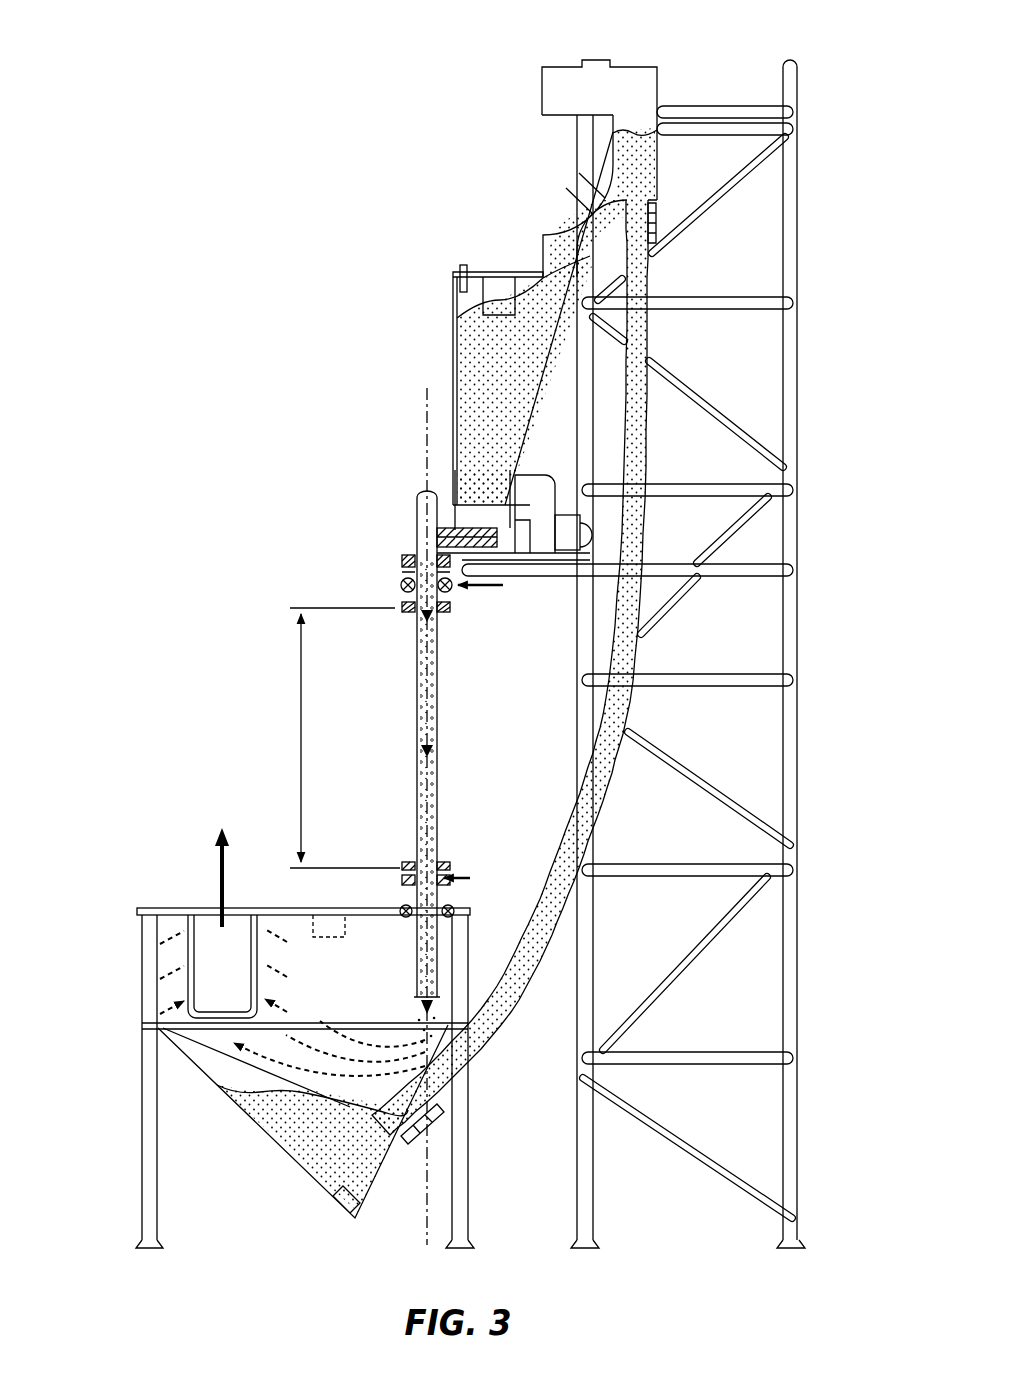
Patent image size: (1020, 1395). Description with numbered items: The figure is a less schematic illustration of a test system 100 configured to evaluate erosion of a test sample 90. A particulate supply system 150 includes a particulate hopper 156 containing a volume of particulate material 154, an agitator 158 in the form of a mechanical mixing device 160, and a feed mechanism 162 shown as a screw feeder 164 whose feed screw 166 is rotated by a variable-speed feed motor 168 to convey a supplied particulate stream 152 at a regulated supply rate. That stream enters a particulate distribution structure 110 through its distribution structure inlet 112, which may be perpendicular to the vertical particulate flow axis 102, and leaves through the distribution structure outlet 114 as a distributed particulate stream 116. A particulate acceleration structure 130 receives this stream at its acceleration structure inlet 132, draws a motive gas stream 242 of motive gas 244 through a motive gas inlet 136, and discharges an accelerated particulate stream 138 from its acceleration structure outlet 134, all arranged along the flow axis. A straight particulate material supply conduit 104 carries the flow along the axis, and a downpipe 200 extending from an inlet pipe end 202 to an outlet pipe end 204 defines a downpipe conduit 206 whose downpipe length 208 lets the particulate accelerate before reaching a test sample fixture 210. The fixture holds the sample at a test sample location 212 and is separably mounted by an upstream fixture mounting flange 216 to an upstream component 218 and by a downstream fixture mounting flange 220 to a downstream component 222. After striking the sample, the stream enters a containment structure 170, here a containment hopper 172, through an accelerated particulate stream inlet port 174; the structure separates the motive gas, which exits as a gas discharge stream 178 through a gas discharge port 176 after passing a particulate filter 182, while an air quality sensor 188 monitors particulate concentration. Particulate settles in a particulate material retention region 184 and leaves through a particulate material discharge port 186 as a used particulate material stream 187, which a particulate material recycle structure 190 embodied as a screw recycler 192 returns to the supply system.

The test sample 90 is at (404, 905).
The test system 100 is at (444, 654).
The particulate flow axis 102 is at (427, 388).
The particulate material supply conduit 104 is at (380, 728).
The particulate distribution structure 110 is at (412, 510).
The distribution structure inlet 112 is at (438, 512).
The distribution structure outlet 114 is at (437, 538).
The distributed particulate stream 116 is at (417, 575).
The particulate acceleration structure 130 is at (398, 590).
The acceleration structure inlet 132 is at (402, 560).
The acceleration structure outlet 134 is at (405, 612).
The motive gas inlet 136 is at (449, 595).
The accelerated particulate stream 138 is at (417, 662).
The particulate supply system 150 is at (397, 717).
The supplied particulate stream 152 is at (450, 512).
The particulate material 154 is at (460, 338).
The particulate hopper 156 is at (452, 292).
The agitator 158 is at (464, 494).
The mechanical mixing device 160 is at (556, 472).
The feed mechanism 162 is at (604, 525).
The screw feeder 164 is at (522, 578).
The feed screw 166 is at (455, 500).
The variable-speed feed motor 168 is at (600, 540).
The containment structure 170 is at (298, 1028).
The containment hopper 172 is at (141, 978).
The accelerated particulate stream inlet port 174 is at (470, 912).
The gas discharge port 176 is at (205, 916).
The gas discharge stream 178 is at (217, 848).
The particulate filter 182 is at (240, 910).
The particulate material retention region 184 is at (312, 1146).
The particulate material discharge port 186 is at (446, 1128).
The used particulate material stream 187 is at (473, 1050).
The air quality sensor 188 is at (330, 910).
The particulate material recycle structure 190 is at (636, 44).
The screw recycler 192 is at (612, 798).
The downpipe 200 is at (420, 801).
The inlet pipe end 202 is at (437, 645).
The outlet pipe end 204 is at (437, 802).
The downpipe conduit 206 is at (417, 778).
The downpipe length 208 is at (301, 683).
The test sample fixture 210 is at (452, 872).
The test sample location 212 is at (452, 880).
The upstream fixture mounting flange 216 is at (449, 866).
The upstream component 218 is at (401, 830).
The downstream fixture mounting flange 220 is at (470, 880).
The downstream component 222 is at (482, 986).
The motive gas stream 242 is at (470, 598).
The motive gas 244 is at (488, 593).